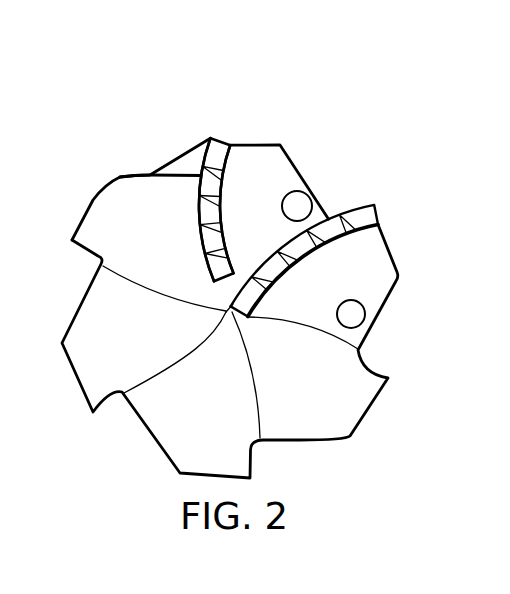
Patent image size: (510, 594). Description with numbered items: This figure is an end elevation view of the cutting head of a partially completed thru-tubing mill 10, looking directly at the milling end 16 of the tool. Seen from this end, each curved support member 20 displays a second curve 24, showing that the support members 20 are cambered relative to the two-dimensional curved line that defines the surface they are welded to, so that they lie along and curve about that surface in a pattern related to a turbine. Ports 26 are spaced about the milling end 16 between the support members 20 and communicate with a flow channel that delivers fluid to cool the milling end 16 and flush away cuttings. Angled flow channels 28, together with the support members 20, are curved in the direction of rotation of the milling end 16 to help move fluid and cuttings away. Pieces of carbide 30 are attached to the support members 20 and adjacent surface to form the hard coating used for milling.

The thru-tubing mill 10 is at (313, 126).
The milling end 16 is at (96, 210).
The curved support member 20 is at (246, 138).
The second curve 24 is at (223, 190).
The port 26 is at (300, 201).
The angled flow channel 28 is at (175, 163).
The carbide 30 is at (205, 150).